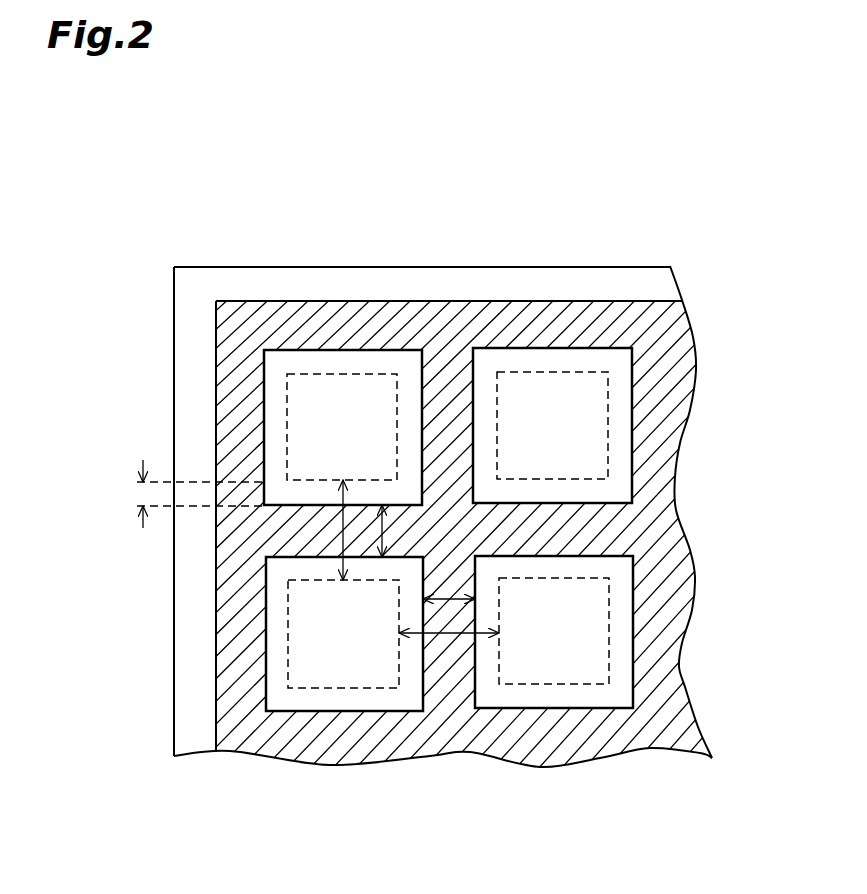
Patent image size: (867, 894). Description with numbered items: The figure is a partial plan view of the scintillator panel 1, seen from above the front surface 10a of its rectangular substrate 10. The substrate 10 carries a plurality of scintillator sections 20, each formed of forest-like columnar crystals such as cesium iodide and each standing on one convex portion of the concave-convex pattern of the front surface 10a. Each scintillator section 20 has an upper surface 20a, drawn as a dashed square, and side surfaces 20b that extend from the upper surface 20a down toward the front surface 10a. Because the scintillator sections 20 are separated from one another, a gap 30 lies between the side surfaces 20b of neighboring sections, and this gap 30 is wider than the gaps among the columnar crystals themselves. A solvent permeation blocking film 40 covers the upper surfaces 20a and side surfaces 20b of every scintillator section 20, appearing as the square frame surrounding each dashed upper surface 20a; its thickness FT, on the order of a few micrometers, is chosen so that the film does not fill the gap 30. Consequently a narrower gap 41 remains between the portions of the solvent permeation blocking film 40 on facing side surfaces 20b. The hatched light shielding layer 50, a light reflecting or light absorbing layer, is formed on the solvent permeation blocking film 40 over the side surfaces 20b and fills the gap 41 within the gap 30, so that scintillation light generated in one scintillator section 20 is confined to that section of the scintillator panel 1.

The scintillator panel 1 is at (702, 242).
The substrate 10 is at (183, 267).
The front surface 10a is at (197, 300).
The scintillator section 20 is at (454, 535).
The upper surface 20a is at (348, 403).
The side surface 20b is at (325, 480).
The gap 30 is at (343, 532).
The solvent permeation blocking film 40 is at (280, 365).
The gap 41 is at (383, 526).
The light shielding layer 50 is at (452, 325).
The thickness FT is at (184, 494).